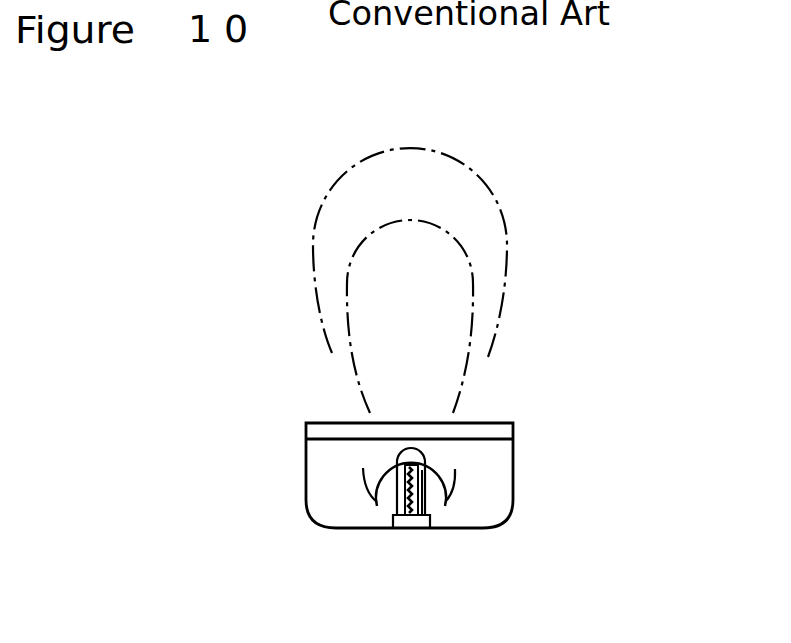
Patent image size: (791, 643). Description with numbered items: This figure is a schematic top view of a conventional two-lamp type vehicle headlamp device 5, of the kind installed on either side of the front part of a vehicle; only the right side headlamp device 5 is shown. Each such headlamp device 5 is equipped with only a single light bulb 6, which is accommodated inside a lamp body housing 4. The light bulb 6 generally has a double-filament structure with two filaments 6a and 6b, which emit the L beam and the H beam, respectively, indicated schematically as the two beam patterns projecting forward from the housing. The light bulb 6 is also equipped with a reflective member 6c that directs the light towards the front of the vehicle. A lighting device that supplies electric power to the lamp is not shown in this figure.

The lamp body housing 4 is at (513, 492).
The two-lamp type headlamp device 5 is at (547, 220).
The light bulb 6 is at (377, 506).
The filament 6a is at (425, 467).
The filament 6b is at (405, 515).
The reflective member 6c is at (445, 506).